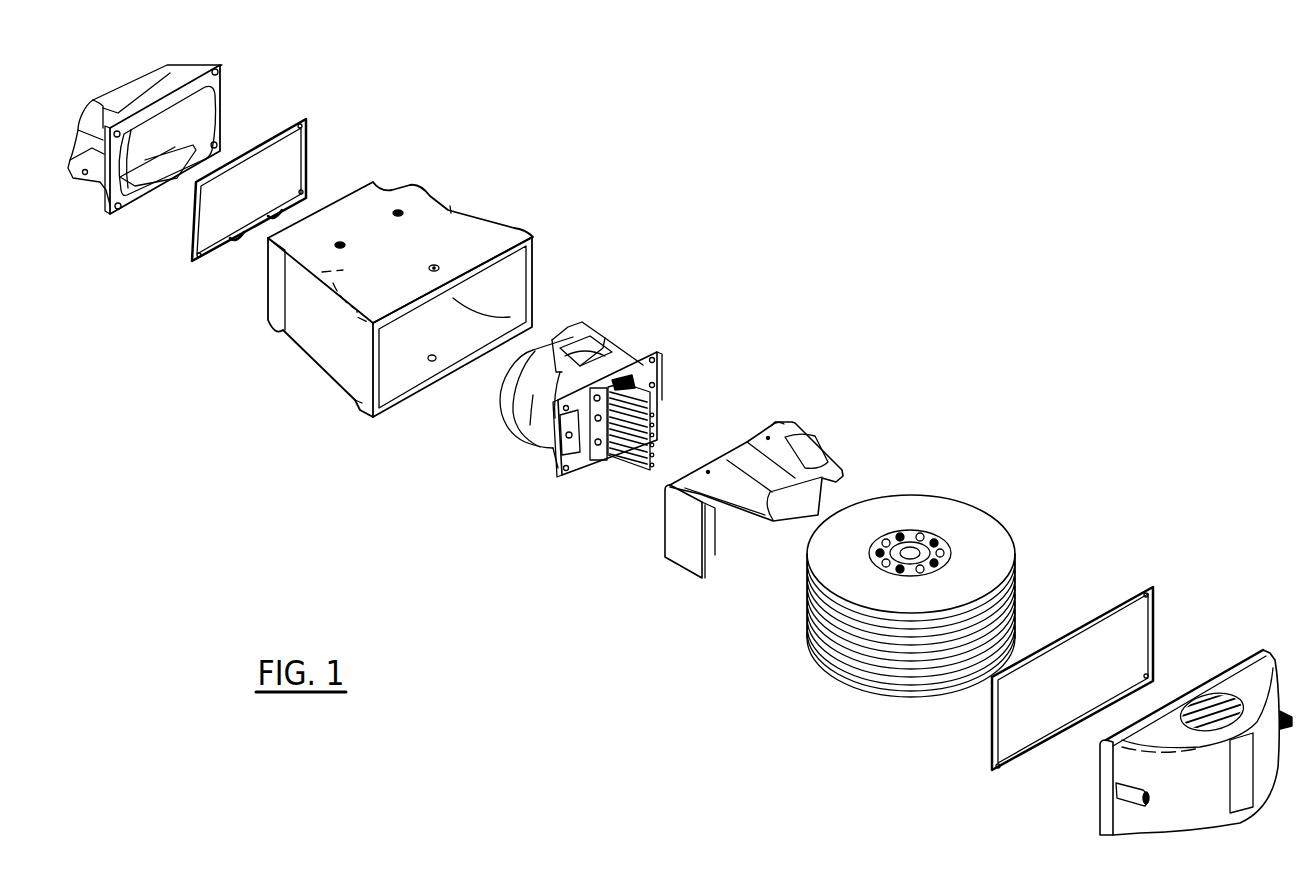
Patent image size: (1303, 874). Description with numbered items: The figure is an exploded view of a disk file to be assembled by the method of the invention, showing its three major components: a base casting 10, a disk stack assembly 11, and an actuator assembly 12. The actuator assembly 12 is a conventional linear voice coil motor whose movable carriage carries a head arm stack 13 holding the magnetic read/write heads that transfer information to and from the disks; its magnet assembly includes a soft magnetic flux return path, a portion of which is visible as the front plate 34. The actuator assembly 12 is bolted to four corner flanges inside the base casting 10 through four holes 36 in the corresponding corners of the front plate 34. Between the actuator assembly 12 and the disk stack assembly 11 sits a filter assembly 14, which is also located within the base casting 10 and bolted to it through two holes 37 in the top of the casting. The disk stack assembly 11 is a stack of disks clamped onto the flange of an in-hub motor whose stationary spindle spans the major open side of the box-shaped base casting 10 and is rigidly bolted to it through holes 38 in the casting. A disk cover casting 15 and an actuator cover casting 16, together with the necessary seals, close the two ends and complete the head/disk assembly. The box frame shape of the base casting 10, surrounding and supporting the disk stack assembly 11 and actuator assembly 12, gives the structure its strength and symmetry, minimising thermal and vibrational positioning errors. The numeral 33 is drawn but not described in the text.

The base casting 10 is at (386, 275).
The disk stack assembly 11 is at (830, 670).
The actuator assembly 12 is at (510, 448).
The head arm stack 13 is at (630, 468).
The filter assembly 14 is at (680, 560).
The disk cover casting 15 is at (1187, 822).
The actuator cover casting 16 is at (132, 78).
The motor flange 33 is at (585, 337).
The front plate 34 is at (660, 362).
The holes 36 is at (562, 397).
The holes 37 is at (398, 213).
The holes 38 is at (438, 266).